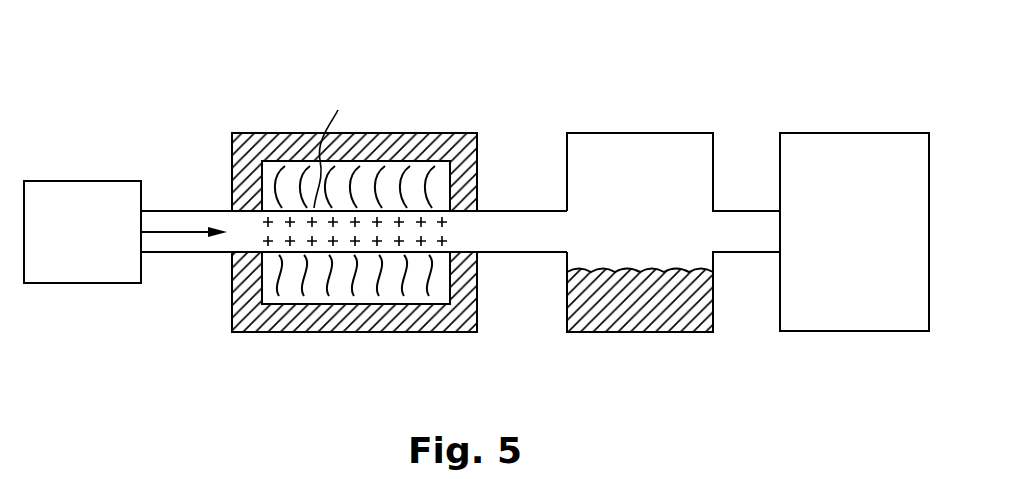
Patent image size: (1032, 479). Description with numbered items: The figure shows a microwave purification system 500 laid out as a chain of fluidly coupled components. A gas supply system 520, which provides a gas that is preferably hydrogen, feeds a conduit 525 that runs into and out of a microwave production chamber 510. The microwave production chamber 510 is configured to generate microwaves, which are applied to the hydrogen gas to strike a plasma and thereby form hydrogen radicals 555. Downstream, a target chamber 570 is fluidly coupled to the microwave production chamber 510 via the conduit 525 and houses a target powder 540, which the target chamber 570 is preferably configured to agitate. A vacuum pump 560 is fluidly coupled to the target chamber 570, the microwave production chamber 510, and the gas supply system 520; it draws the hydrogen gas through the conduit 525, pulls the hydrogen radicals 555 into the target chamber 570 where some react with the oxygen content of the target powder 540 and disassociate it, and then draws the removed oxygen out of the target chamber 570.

The microwave purification system 500 is at (484, 44).
The microwave production chamber 510 is at (232, 146).
The gas supply system 520 is at (62, 181).
The conduit 525 is at (195, 254).
The hydrogen radicals 555 is at (313, 243).
The target chamber 570 is at (638, 170).
The target powder 540 is at (648, 308).
The vacuum pump 560 is at (850, 332).